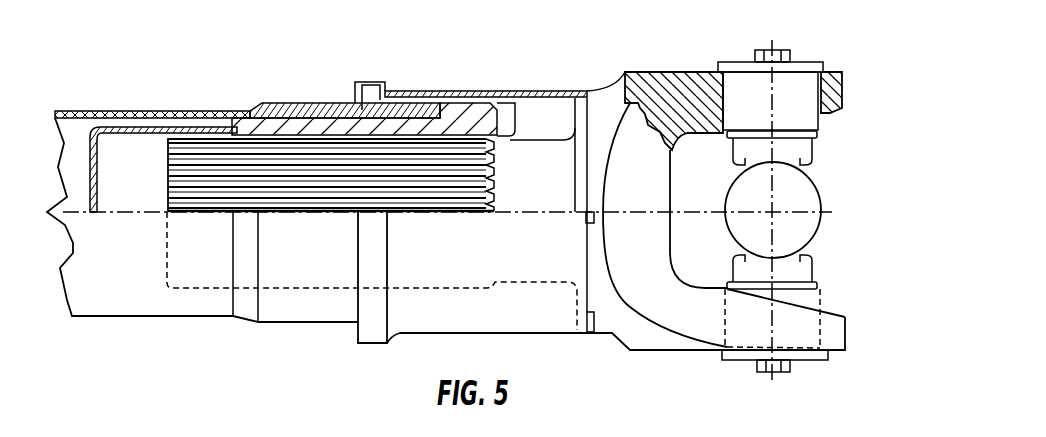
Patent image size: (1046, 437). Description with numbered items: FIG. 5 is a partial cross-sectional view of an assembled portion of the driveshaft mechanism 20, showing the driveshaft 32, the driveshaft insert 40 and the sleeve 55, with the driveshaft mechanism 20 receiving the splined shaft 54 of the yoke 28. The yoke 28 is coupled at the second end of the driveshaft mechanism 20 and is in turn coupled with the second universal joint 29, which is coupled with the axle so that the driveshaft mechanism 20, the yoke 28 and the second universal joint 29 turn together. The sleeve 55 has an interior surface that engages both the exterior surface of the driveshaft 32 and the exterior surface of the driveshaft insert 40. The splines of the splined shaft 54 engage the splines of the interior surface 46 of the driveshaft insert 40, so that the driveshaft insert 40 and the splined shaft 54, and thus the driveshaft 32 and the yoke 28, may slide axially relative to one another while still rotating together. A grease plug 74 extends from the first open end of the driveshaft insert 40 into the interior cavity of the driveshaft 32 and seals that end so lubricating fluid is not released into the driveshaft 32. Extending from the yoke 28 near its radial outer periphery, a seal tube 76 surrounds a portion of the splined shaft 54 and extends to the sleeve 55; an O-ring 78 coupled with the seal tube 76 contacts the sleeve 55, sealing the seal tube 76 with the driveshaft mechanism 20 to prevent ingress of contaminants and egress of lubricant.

The driveshaft mechanism 20 is at (265, 84).
The yoke 28 is at (657, 88).
The second universal joint 29 is at (808, 197).
The driveshaft 32 is at (222, 115).
The driveshaft insert 40 is at (503, 118).
The splined interior surface 46 is at (445, 141).
The splined shaft 54 is at (202, 175).
The sleeve 55 is at (303, 110).
The grease plug 74 is at (73, 147).
The seal tube 76 is at (415, 90).
The O-ring 78 is at (370, 92).